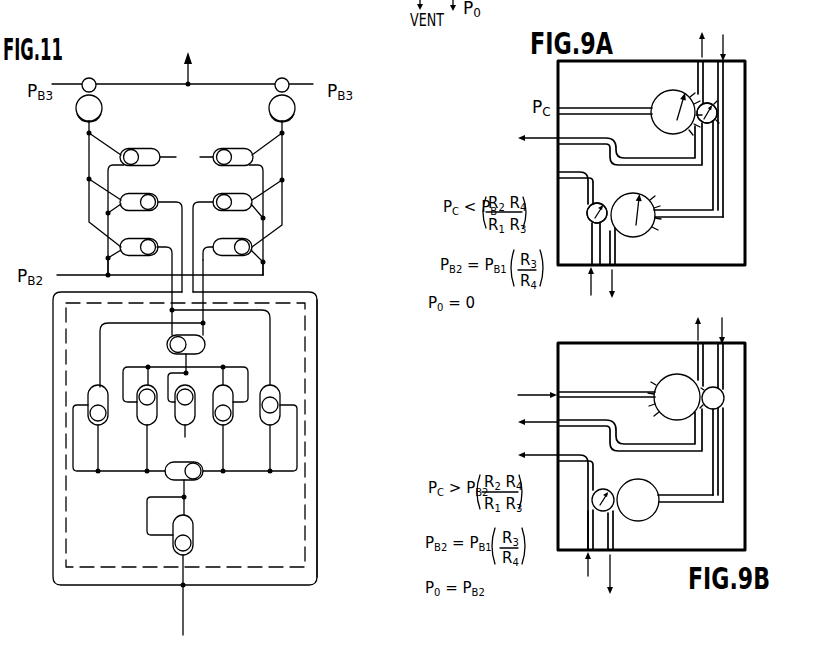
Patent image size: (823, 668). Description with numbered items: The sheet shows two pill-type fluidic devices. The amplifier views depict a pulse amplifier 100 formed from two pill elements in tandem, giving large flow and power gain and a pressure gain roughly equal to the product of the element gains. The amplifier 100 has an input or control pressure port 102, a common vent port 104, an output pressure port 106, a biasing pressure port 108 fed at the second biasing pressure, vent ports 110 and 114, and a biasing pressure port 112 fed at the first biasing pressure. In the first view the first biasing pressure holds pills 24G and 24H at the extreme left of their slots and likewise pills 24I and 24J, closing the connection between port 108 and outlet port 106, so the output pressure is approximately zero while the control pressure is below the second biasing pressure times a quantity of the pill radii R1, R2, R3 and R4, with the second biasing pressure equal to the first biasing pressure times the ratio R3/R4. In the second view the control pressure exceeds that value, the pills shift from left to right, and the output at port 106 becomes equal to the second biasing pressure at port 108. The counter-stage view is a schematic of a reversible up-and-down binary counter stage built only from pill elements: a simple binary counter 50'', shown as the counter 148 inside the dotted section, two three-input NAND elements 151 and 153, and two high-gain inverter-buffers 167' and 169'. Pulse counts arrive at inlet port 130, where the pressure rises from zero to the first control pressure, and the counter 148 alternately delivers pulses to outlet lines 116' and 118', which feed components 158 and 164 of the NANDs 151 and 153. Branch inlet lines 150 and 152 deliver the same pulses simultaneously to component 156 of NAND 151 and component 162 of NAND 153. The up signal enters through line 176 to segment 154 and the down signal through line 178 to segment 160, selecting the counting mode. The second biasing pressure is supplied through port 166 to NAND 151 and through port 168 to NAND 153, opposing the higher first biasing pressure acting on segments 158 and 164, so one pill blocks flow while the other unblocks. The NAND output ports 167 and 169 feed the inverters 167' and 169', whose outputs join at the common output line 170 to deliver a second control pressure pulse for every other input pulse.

In FIG. 11, the control pressure conduit PC2 170 is at (186, 71).
In FIG. 11, the high gain inverter-buffer element 167' is at (109, 77).
In FIG. 11, the output port 167 is at (75, 112).
In FIG. 11, the high gain inverter-buffer element 169' is at (309, 70).
In FIG. 11, the output port 169 is at (300, 113).
In FIG. 11, the three-input NAND element 151 is at (82, 263).
In FIG. 11, the three-input NAND element 153 is at (291, 133).
In FIG. 11, the NAND segment 154 is at (132, 147).
In FIG. 11, the NAND segment 156 is at (146, 193).
In FIG. 11, the NAND segment 158 is at (157, 231).
In FIG. 11, the NAND segment 160 is at (236, 147).
In FIG. 11, the NAND segment 162 is at (232, 194).
In FIG. 11, the NAND segment 164 is at (228, 238).
In FIG. 11, the biasing inlet port 166 is at (109, 261).
In FIG. 11, the biasing inlet port 168 is at (263, 263).
In FIG. 11, the up signal line 176 is at (165, 158).
In FIG. 11, the down signal line 178 is at (213, 150).
In FIG. 11, the outlet line 116' is at (197, 338).
In FIG. 11, the outlet line 118' is at (196, 323).
In FIG. 11, the branch inlet line 150 is at (53, 383).
In FIG. 11, the branch inlet line 152 is at (317, 324).
In FIG. 11, the simple counter 148 is at (305, 388).
In FIG. 11, the simple binary counter 50'' is at (185, 445).
In FIG. 11, the inlet port 130 is at (185, 606).
In FIG. 9A, the pulse amplifier 100 is at (752, 176).
In FIG. 9B, the pulse amplifier 100 is at (753, 450).
In FIG. 9A, the control pressure port 102 is at (580, 107).
In FIG. 9B, the control pressure port 102 is at (589, 391).
In FIG. 9A, the common vent port 104 is at (589, 139).
In FIG. 9B, the common vent port 104 is at (588, 426).
In FIG. 9A, the output pressure port 106 is at (561, 172).
In FIG. 9B, the output pressure port 106 is at (561, 457).
In FIG. 9A, the biasing pressure port 108 is at (590, 258).
In FIG. 9B, the biasing pressure port 108 is at (590, 547).
In FIG. 9A, the vent port 110 is at (611, 250).
In FIG. 9B, the vent port 110 is at (612, 554).
In FIG. 9A, the biasing pressure port 112 is at (723, 68).
In FIG. 9B, the biasing pressure port 112 is at (723, 354).
In FIG. 9A, the vent port 114 is at (698, 72).
In FIG. 9B, the vent port 114 is at (694, 355).
In FIG. 9A, the pill 24G is at (661, 131).
In FIG. 9B, the pill 24G is at (667, 388).
In FIG. 9A, the pill 24H is at (697, 128).
In FIG. 9B, the pill 24H is at (724, 395).
In FIG. 9A, the pill 24I is at (588, 211).
In FIG. 9B, the pill 24I is at (612, 510).
In FIG. 9A, the pill 24J is at (648, 233).
In FIG. 9B, the pill 24J is at (650, 491).
In FIG. 9A, the pill radius R1 is at (684, 113).
In FIG. 9A, the pill radius R2 is at (718, 118).
In FIG. 9A, the pill radius R3 is at (640, 214).
In FIG. 9A, the pill radius R4 is at (588, 218).